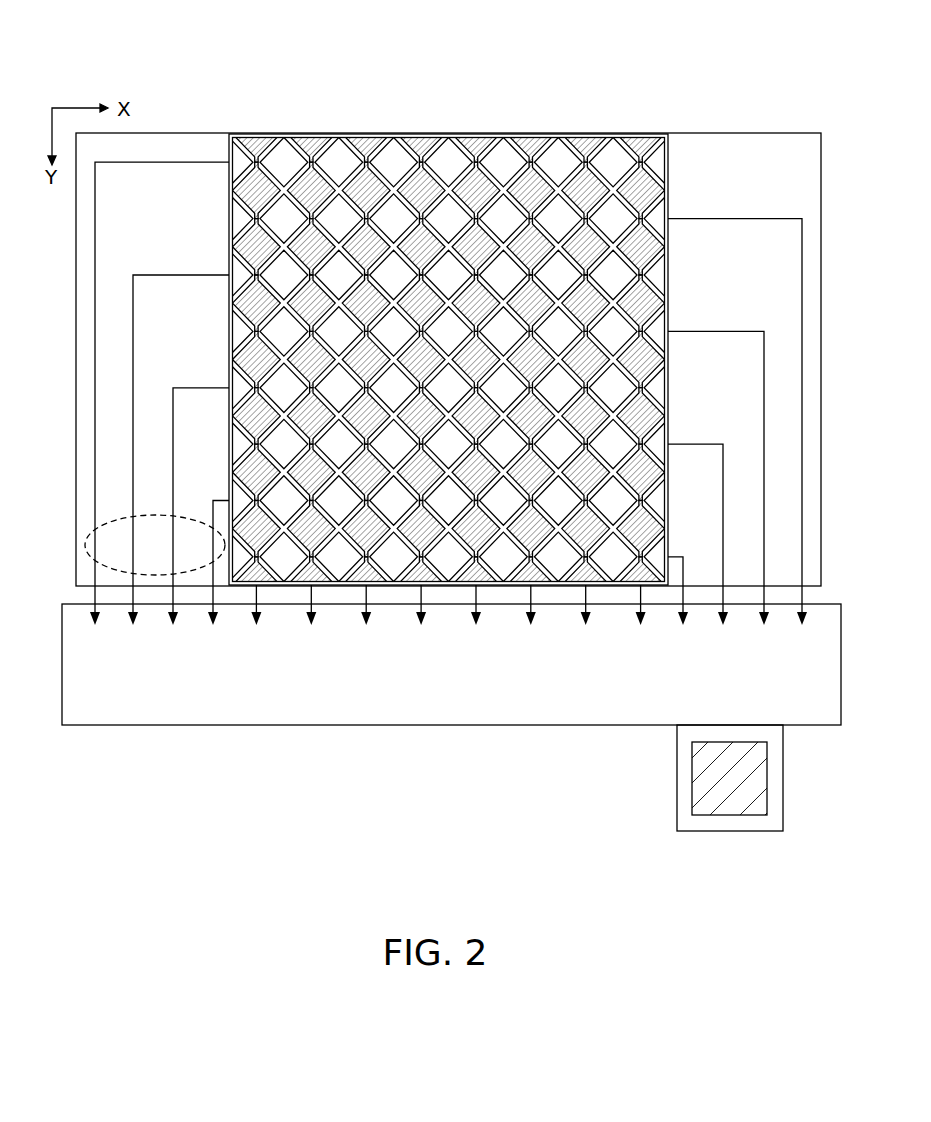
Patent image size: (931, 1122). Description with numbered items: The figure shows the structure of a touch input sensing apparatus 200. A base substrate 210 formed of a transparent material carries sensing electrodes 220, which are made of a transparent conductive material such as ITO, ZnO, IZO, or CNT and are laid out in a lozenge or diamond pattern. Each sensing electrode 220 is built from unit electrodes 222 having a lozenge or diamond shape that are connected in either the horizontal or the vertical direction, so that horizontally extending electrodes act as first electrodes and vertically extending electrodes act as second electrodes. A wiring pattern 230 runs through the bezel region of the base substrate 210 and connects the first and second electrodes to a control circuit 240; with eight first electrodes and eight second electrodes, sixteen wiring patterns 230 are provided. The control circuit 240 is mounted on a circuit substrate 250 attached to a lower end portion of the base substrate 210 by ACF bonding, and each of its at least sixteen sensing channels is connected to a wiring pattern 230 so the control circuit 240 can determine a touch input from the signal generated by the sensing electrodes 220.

The touch input sensing apparatus 200 is at (678, 88).
The base substrate 210 is at (313, 133).
The sensing electrodes 220 is at (420, 145).
The unit electrodes 222 is at (557, 137).
The wiring pattern 230 is at (105, 522).
The control circuit 240 is at (723, 805).
The circuit substrate 250 is at (493, 708).